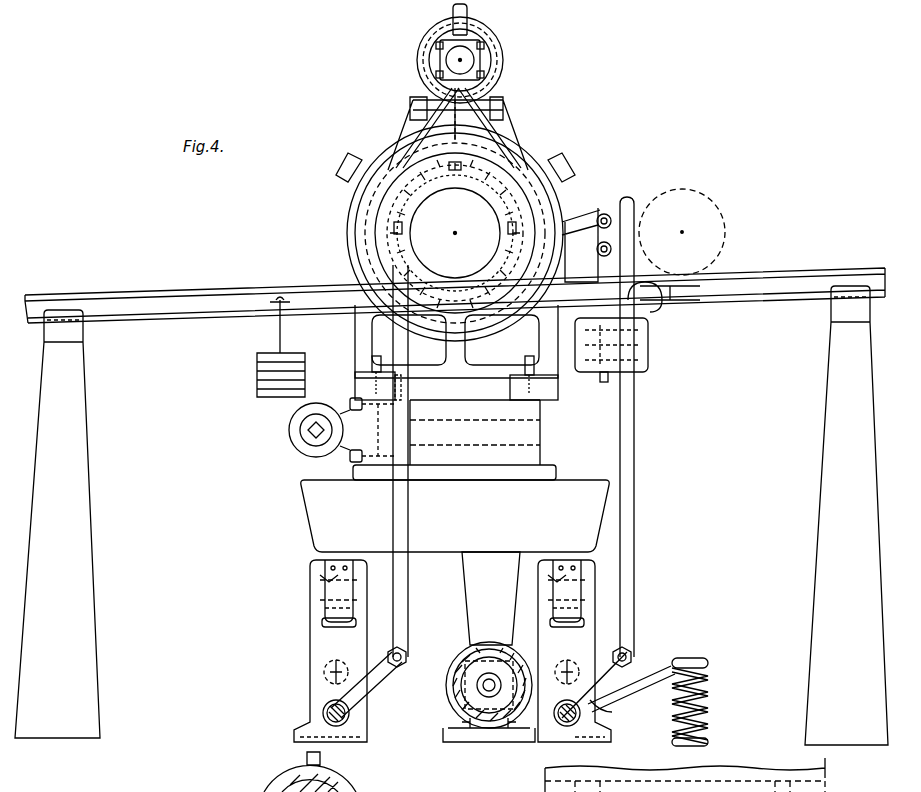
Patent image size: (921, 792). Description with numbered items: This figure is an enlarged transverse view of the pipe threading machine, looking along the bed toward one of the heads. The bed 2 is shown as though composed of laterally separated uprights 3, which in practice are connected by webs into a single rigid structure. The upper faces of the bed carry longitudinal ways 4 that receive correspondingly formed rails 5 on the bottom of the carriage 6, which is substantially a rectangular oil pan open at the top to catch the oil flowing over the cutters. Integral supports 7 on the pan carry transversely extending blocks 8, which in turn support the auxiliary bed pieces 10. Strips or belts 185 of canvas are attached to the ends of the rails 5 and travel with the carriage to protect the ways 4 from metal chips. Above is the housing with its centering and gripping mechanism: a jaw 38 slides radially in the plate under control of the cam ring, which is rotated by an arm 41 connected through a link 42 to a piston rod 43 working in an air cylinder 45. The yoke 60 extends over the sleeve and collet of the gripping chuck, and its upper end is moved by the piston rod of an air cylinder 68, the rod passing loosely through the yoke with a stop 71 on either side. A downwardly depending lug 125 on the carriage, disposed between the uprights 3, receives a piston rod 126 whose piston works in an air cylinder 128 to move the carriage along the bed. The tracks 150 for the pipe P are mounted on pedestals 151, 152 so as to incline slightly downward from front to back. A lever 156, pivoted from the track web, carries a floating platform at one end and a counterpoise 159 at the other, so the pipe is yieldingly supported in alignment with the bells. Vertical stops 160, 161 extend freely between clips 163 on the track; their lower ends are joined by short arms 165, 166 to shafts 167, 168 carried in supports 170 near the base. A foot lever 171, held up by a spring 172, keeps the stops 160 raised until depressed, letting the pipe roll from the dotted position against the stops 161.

The bed 2 is at (309, 660).
The uprights 3 is at (451, 660).
The ways 4 is at (324, 578).
The rails 5 is at (318, 560).
The carriage 6 is at (455, 516).
The supports 7 is at (350, 466).
The blocks 8 is at (541, 440).
The auxiliary bed pieces 10 is at (354, 380).
The jaw 38 is at (338, 178).
The arm 41 is at (580, 218).
The link 42 is at (598, 240).
The piston rod 43 is at (604, 266).
The air cylinder 45 is at (648, 355).
The yoke 60 is at (530, 168).
The air cylinder 68 is at (503, 68).
The stop 71 is at (470, 62).
The pipe P is at (726, 232).
The lug 125 is at (491, 598).
The piston rod 126 is at (489, 690).
The air cylinder 128 is at (458, 702).
The tracks 150 is at (218, 292).
The pedestal 151 is at (57, 524).
The pedestal 152 is at (810, 638).
The lever 156 is at (268, 306).
The counterpoise 159 is at (255, 382).
The stops 160 is at (636, 466).
The stops 161 is at (392, 513).
The clips 163 is at (650, 302).
The arms 165 is at (612, 696).
The arms 166 is at (372, 690).
The shaft 167 is at (568, 717).
The shaft 168 is at (338, 717).
The supports 170 is at (322, 722).
The foot lever 171 is at (655, 672).
The spring 172 is at (710, 690).
The belts 185 is at (326, 600).